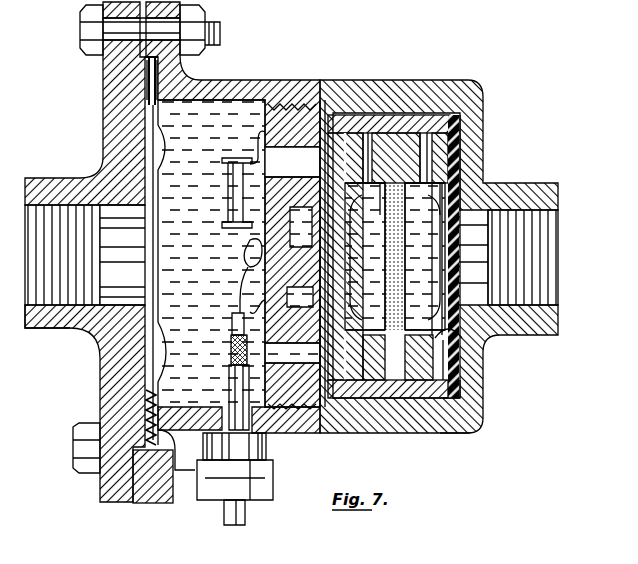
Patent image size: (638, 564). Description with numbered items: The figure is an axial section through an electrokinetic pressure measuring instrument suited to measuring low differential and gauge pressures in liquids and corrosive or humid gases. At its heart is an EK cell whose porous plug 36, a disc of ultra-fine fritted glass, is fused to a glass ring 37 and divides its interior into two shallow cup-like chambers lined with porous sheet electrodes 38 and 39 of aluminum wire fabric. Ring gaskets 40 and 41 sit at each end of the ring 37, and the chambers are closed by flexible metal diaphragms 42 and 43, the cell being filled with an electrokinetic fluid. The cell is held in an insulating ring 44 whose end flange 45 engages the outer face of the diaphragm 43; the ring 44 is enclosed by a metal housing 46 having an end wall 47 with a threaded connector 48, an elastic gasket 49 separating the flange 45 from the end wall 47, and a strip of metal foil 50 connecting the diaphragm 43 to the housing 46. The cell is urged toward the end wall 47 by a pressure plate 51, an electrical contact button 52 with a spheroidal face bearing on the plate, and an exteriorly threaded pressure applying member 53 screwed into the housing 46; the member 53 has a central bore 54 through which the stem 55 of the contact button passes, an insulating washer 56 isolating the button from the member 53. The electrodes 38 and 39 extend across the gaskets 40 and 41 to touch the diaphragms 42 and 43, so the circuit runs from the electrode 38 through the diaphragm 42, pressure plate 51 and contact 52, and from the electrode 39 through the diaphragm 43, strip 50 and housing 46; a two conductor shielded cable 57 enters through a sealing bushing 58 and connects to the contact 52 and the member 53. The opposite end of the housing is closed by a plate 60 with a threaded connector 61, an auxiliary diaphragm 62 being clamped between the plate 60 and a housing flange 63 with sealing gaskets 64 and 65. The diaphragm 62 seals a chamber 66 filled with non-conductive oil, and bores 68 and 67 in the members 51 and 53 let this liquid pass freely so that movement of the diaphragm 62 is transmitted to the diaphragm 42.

The porous plug 36 is at (433, 270).
The ring 37 is at (463, 140).
The porous sheet electrode 38 is at (433, 247).
The porous sheet electrode 39 is at (433, 290).
The ring gasket 40 is at (372, 115).
The ring gasket 41 is at (432, 115).
The flexible metal diaphragm 42 is at (337, 115).
The flexible metal diaphragm 43 is at (423, 213).
The insulating ring 44 is at (387, 403).
The end flange 45 is at (462, 368).
The metal housing 46 is at (460, 432).
The end wall 47 is at (480, 390).
The threaded connector 48 is at (547, 323).
The elastic gasket 49 is at (452, 393).
The strip of metal foil 50 is at (470, 330).
The pressure plate 51 is at (333, 403).
The electrical contact button 52 is at (264, 300).
The pressure applying member 53 is at (260, 308).
The central bore 54 is at (243, 288).
The stem 55 is at (253, 240).
The insulating washer 56 is at (260, 225).
The two conductor shielded cable 57 is at (243, 510).
The sealing bushing 58 is at (260, 482).
The plate 60 is at (100, 392).
The threaded connector 61 is at (68, 330).
The auxiliary diaphragm 62 is at (157, 261).
The flange 63 is at (153, 500).
The sealing gasket 64 is at (143, 70).
The sealing gasket 65 is at (157, 90).
The chamber 66 is at (200, 192).
The bore 67 is at (300, 174).
The bore 68 is at (335, 305).